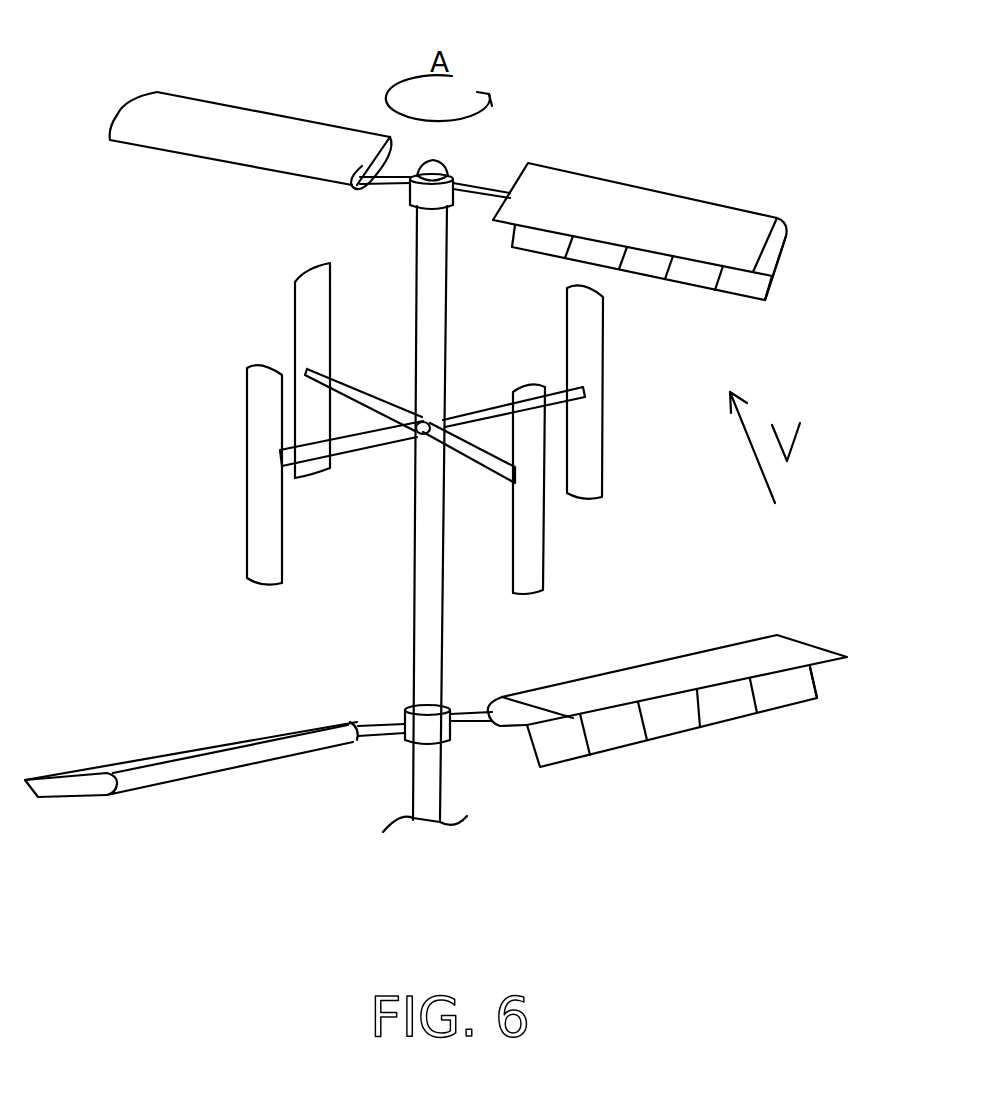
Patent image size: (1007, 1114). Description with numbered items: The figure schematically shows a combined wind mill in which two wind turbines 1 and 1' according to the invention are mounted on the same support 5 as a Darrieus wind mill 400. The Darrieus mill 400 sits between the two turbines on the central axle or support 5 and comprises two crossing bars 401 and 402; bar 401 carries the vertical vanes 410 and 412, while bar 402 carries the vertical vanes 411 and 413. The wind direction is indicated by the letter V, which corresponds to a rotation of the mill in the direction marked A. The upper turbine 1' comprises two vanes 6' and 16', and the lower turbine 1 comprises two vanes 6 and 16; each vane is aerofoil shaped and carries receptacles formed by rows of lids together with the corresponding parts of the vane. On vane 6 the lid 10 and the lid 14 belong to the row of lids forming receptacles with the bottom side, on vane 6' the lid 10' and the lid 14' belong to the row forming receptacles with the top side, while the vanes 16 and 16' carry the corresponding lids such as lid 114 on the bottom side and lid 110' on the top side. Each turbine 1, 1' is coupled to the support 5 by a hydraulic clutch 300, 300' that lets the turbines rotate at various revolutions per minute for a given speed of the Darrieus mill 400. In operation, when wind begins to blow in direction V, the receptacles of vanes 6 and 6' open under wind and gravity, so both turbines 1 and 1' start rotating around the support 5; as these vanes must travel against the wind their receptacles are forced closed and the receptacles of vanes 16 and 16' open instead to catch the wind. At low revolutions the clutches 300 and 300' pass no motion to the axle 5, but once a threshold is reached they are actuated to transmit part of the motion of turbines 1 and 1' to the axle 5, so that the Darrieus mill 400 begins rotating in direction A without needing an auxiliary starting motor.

The wind turbine 1 is at (430, 737).
The wind turbine 1' is at (461, 196).
The support 5 is at (445, 643).
The vane 6 is at (667, 719).
The vane 6' is at (658, 253).
The lid 10 is at (672, 744).
The lid 10' is at (636, 262).
The lid 14 is at (809, 709).
The lid 14' is at (756, 289).
The vane 16 is at (185, 789).
The vane 16' is at (255, 119).
The lid 110' is at (435, 153).
The lid 114 is at (60, 800).
The hydraulic clutch 300 is at (416, 755).
The hydraulic clutch 300' is at (464, 177).
The Darrieus wind mill 400 is at (196, 451).
The bar 401 is at (470, 405).
The bar 402 is at (473, 467).
The vane 410 is at (604, 353).
The vane 411 is at (330, 300).
The vane 412 is at (242, 545).
The vane 413 is at (545, 560).